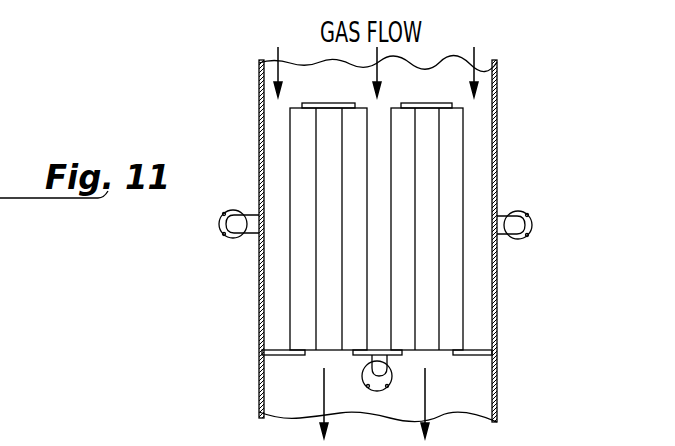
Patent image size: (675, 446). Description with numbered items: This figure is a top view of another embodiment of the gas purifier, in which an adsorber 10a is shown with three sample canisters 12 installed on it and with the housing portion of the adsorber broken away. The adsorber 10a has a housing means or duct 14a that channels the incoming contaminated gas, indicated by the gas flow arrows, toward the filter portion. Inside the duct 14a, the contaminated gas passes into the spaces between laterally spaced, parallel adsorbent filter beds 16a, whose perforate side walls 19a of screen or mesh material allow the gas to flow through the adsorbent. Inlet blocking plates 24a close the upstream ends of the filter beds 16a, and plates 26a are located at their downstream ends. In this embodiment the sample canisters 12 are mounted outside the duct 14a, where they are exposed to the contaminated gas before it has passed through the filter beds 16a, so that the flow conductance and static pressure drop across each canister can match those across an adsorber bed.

The filter housing assembly 10a is at (453, 238).
The sample canister 12 is at (221, 232).
The housing wall 14a is at (535, 360).
The filter tube element 16a is at (348, 153).
The gas outlet 19a is at (161, 437).
The inlet blocking plate 24a is at (328, 103).
The bottom support plate 26a is at (280, 355).